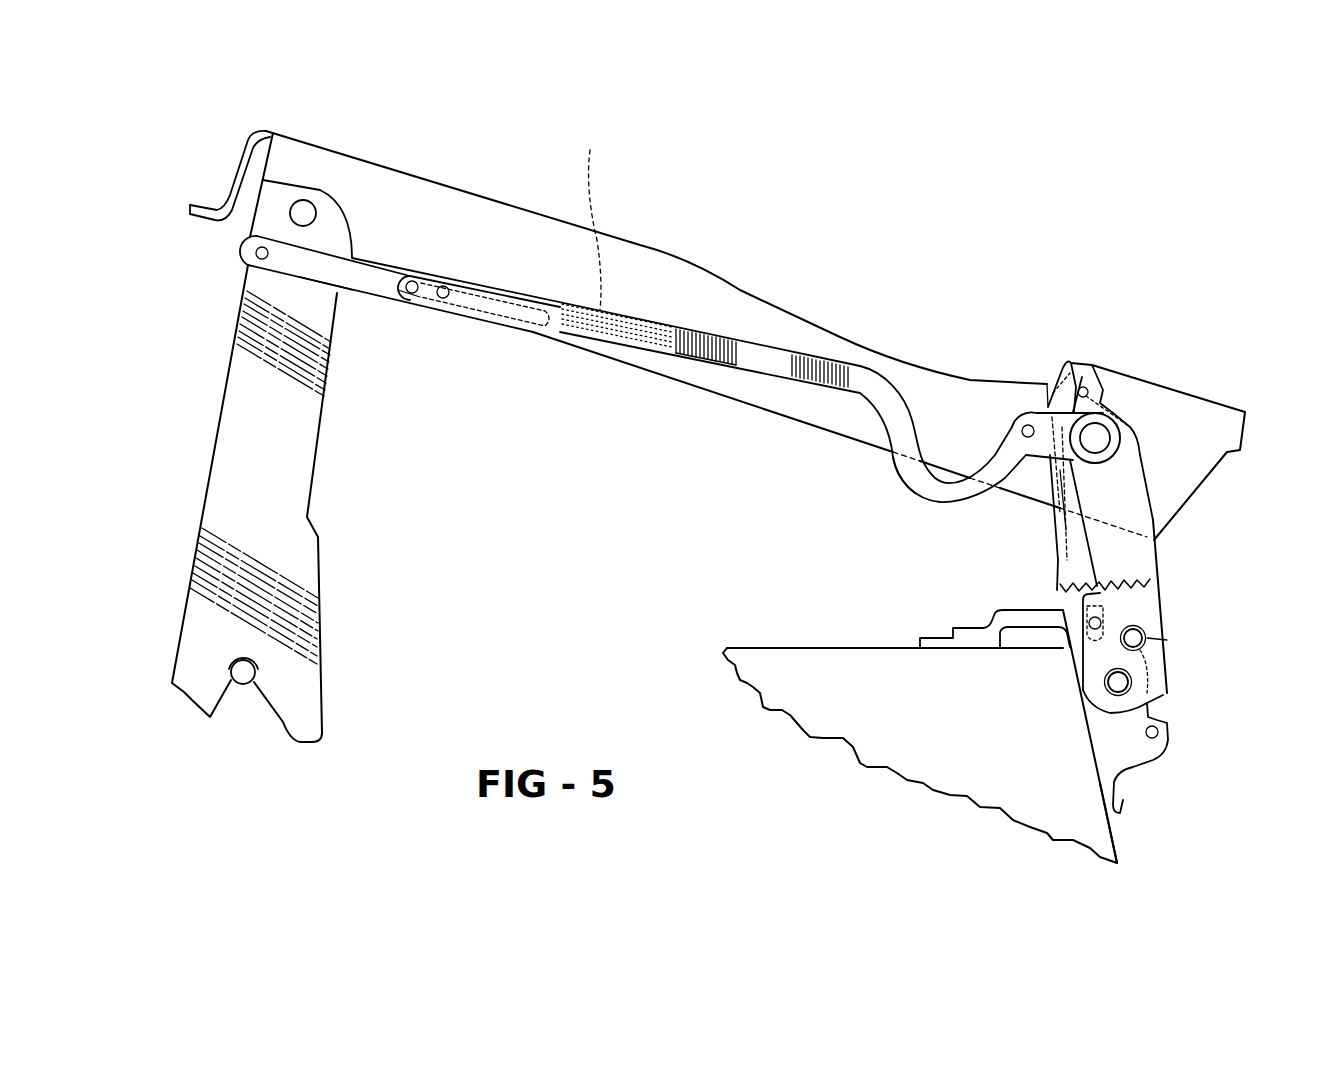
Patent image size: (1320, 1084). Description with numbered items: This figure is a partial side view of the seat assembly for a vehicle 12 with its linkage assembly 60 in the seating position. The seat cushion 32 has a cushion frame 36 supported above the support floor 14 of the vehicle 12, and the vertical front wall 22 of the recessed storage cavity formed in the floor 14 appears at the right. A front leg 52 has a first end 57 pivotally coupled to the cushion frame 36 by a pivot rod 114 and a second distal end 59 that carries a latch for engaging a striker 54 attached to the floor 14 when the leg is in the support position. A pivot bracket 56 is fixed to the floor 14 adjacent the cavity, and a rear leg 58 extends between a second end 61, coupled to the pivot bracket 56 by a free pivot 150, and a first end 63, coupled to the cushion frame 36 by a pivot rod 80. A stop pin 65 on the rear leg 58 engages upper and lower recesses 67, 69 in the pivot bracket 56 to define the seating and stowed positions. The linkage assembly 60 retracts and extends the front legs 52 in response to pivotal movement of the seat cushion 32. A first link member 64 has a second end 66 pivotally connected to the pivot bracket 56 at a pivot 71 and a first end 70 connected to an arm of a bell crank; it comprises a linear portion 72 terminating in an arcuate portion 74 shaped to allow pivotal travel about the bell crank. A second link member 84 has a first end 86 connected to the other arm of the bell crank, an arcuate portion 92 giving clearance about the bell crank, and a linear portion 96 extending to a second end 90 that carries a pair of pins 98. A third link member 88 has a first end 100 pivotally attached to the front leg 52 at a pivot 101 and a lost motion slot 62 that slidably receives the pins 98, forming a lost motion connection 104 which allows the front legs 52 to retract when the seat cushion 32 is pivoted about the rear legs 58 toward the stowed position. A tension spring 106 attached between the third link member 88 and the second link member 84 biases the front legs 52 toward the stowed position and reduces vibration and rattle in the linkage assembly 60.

The vehicle 12 is at (870, 712).
The support floor 14 is at (782, 647).
The vertical front wall 22 is at (1122, 848).
The seat cushion 32 is at (825, 235).
The cushion frame 36 is at (647, 243).
The front legs 52 is at (177, 621).
The strikers 54 is at (234, 690).
The pivot brackets 56 is at (1123, 800).
The first end 57 is at (278, 158).
The rear legs 58 is at (1157, 541).
The second distal end 59 is at (296, 748).
The linkage assembly 60 is at (769, 403).
The second end 61 is at (1146, 636).
The lost motion slot 62 is at (488, 306).
The first end 63 is at (1064, 362).
The first link member 64 is at (1053, 522).
The stop pin 65 is at (1167, 637).
The second end 66 is at (1057, 598).
The upper recess 67 is at (1160, 587).
The lower recess 69 is at (1162, 703).
The first end 70 is at (1092, 364).
The pivot 71 is at (1091, 628).
The linear portion 72 is at (1053, 478).
The arcuate portion 74 is at (1050, 393).
The pivot rod 80 is at (1100, 438).
The second link member 84 is at (703, 340).
The first end 86 is at (997, 456).
The third link member 88 is at (353, 292).
The second end 90 is at (384, 285).
The arcuate portion 92 is at (907, 465).
The linear portion 96 is at (667, 355).
The pins 98 is at (443, 286).
The first end 100 is at (250, 266).
The pivot 101 is at (257, 254).
The lost motion connection 104 is at (455, 350).
The tension spring 106 is at (612, 218).
The pivot rod 114 is at (316, 210).
The free pivot 150 is at (1118, 683).